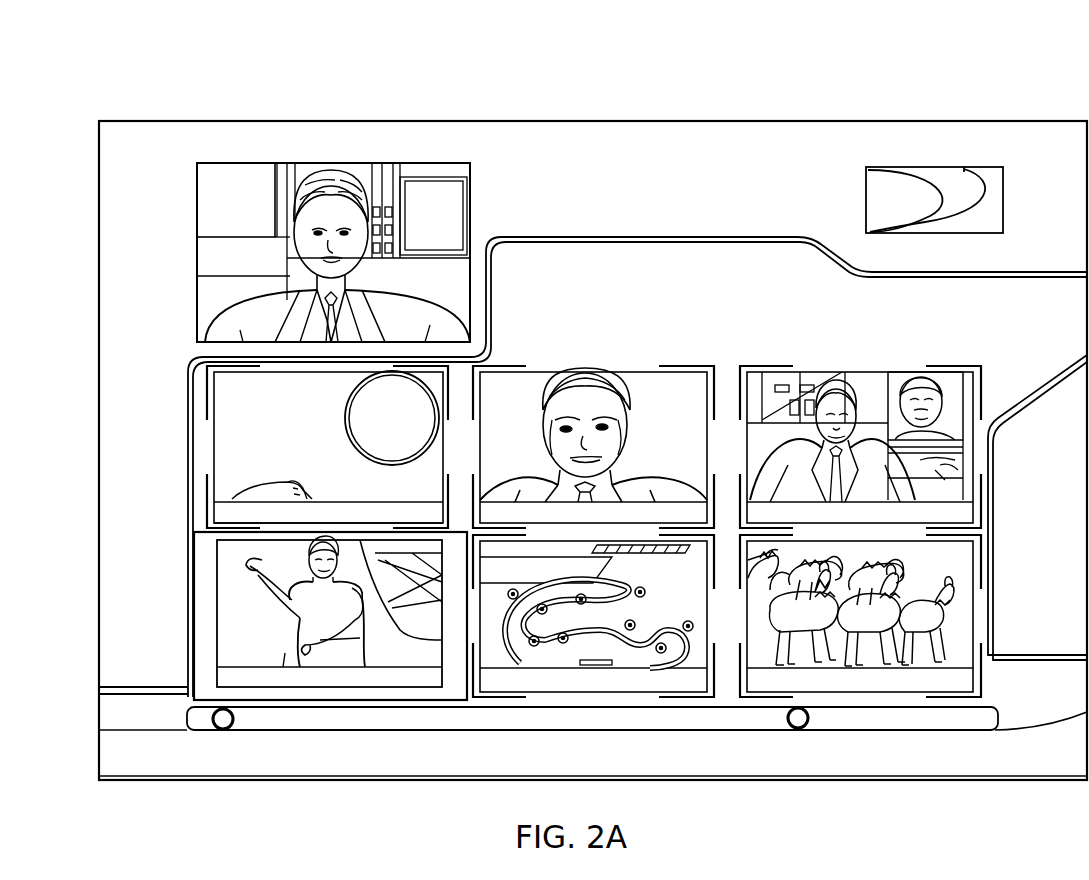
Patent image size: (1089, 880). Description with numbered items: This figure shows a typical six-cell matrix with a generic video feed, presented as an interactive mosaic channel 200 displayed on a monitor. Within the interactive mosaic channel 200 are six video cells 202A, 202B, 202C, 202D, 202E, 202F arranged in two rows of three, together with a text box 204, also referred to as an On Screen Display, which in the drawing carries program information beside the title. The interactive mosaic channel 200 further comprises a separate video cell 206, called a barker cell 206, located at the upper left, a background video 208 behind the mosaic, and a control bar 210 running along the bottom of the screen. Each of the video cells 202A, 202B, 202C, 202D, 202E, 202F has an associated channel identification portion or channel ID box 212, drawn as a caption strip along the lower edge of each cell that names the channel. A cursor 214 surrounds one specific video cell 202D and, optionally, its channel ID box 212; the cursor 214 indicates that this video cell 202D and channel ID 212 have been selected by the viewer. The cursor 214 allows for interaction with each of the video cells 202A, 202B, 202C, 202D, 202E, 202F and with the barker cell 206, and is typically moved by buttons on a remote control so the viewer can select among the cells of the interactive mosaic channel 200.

The interactive mosaic channel 200 is at (553, 86).
The text box 204 is at (828, 280).
The barker cell 206 is at (246, 170).
The background video 208 is at (704, 168).
The video cell 202A is at (225, 437).
The video cell 202B is at (690, 378).
The video cell 202C is at (947, 390).
The video cell 202D is at (285, 654).
The video cell 202E is at (572, 650).
The video cell 202F is at (955, 580).
The control bar 210 is at (205, 730).
The channel identification portion 212 is at (222, 520).
The cursor 214 is at (203, 588).